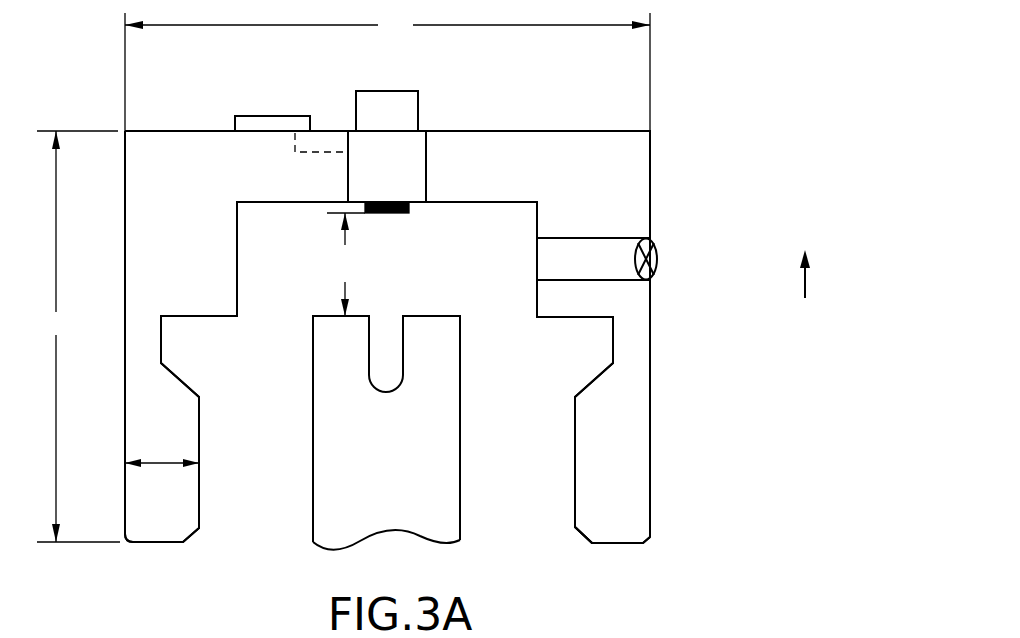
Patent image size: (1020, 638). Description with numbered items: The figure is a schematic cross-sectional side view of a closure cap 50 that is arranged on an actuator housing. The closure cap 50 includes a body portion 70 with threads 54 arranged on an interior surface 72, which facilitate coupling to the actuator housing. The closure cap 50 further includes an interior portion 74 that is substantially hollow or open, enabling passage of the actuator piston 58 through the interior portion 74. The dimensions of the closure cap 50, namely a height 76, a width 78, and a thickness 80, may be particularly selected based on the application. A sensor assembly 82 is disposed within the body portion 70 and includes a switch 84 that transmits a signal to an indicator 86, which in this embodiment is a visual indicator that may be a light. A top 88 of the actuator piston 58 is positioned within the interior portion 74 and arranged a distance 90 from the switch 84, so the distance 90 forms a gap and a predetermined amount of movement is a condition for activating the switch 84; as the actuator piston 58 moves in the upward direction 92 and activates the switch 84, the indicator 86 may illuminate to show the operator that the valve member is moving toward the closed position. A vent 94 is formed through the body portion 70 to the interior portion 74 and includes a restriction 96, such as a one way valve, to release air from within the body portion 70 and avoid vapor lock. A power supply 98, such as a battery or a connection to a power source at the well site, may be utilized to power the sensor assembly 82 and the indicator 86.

The closure cap 50 is at (712, 104).
The threads 54 is at (575, 520).
The actuator piston 58 is at (374, 467).
The body portion 70 is at (650, 455).
The interior surface 72 is at (575, 487).
The interior portion 74 is at (233, 550).
The height 76 is at (78, 336).
The width 78 is at (387, 71).
The thickness 80 is at (163, 464).
The sensor assembly 82 is at (446, 152).
The switch 84 is at (395, 213).
The indicator 86 is at (386, 105).
The top 88 is at (443, 316).
The distance 90 is at (346, 264).
The upward direction 92 is at (817, 277).
The vent 94 is at (670, 231).
The restriction 96 is at (657, 268).
The power supply 98 is at (263, 123).